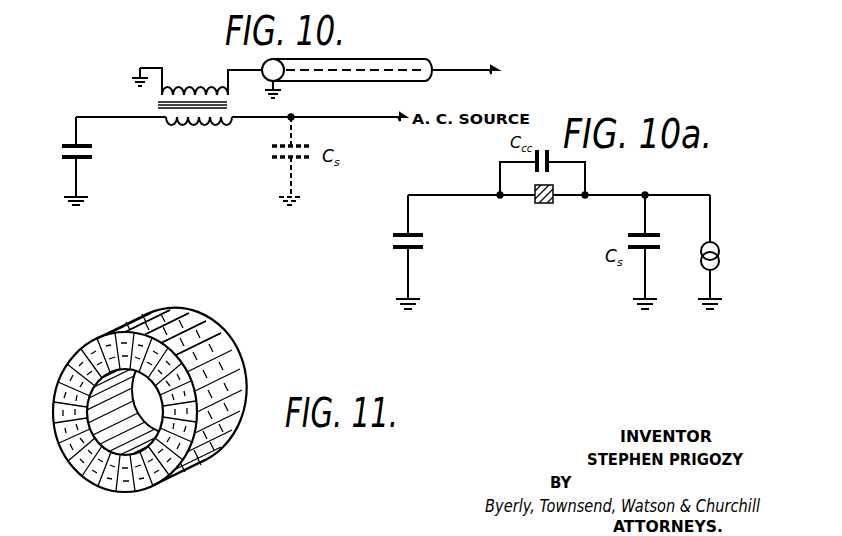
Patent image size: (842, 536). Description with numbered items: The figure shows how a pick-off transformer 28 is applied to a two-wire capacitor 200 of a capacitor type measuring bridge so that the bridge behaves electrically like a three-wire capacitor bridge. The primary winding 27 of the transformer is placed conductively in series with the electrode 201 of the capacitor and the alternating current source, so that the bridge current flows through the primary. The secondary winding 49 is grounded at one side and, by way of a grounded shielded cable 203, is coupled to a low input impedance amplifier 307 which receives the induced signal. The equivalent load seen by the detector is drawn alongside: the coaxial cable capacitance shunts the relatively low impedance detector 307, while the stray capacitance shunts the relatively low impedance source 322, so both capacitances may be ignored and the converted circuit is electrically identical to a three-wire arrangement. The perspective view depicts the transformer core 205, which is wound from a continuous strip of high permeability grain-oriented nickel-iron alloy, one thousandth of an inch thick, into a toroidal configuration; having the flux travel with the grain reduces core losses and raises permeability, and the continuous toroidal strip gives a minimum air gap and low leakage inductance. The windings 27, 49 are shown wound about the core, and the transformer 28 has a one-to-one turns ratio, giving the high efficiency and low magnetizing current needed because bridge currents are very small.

In FIG. 10, the secondary winding 49 is at (190, 92).
In FIG. 11, the secondary winding 49 is at (177, 320).
In FIG. 10, the primary winding 27 is at (193, 123).
In FIG. 11, the primary winding 27 is at (212, 324).
In FIG. 10, the pick-off transformer 28 is at (228, 104).
In FIG. 10, the two-wire capacitor 200 is at (93, 152).
In FIG. 10A, the two-wire capacitor 200 is at (425, 241).
In FIG. 10, the electrode 201 is at (67, 144).
In FIG. 10, the grounded shielded cable 203 is at (415, 66).
In FIG. 10A, the low input impedance amplifier 307 is at (547, 205).
In FIG. 10A, the source 322 is at (718, 245).
In FIG. 11, the transformer core 205 is at (227, 360).